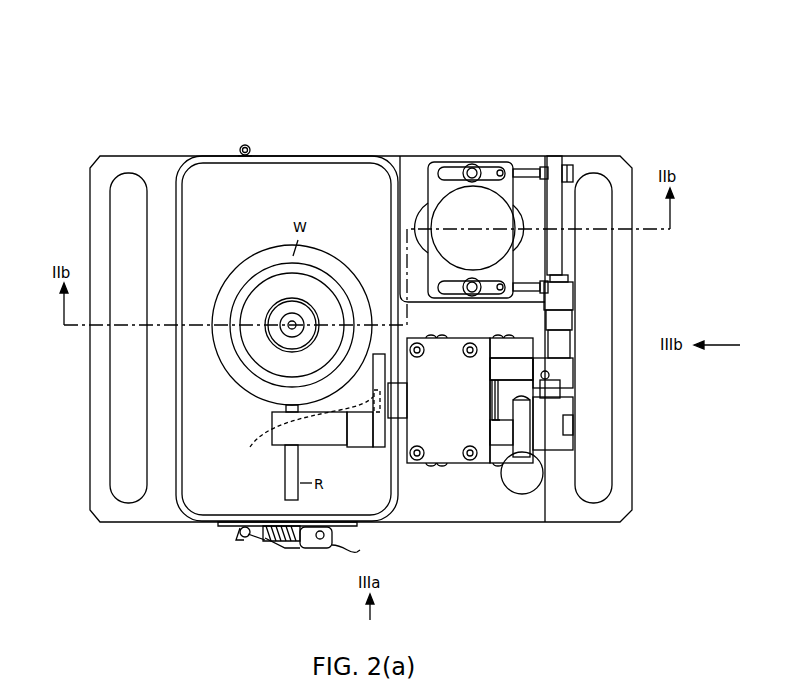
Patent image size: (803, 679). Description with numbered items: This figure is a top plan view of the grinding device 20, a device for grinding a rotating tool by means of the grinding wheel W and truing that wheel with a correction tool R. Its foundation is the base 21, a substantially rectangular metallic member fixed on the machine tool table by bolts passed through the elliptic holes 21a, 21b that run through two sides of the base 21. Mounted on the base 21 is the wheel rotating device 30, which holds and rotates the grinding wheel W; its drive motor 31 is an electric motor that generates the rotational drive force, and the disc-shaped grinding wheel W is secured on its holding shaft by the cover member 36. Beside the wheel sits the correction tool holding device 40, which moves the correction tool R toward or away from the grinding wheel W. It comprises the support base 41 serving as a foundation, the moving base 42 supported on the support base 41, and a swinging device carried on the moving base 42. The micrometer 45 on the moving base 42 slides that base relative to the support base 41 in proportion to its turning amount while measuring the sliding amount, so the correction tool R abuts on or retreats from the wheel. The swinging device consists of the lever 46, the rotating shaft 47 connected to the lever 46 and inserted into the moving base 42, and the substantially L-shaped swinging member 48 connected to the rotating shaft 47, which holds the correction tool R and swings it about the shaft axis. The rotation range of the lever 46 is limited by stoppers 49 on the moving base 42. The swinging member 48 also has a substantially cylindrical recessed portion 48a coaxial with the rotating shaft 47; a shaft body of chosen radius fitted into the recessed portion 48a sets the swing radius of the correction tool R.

The grinding device 20 is at (512, 135).
The base 21 is at (632, 492).
The elliptic hole 21a is at (112, 212).
The elliptic hole 21b is at (612, 262).
The wheel rotating device 30 is at (423, 152).
The drive motor 31 is at (497, 215).
The cover member 36 is at (283, 343).
The correction tool holding device 40 is at (498, 433).
The support base 41 is at (527, 338).
The moving base 42 is at (450, 338).
The micrometer 45 is at (568, 320).
The lever 46 is at (532, 478).
The rotating shaft 47 is at (395, 398).
The swinging member 48 is at (350, 438).
The recessed portion 48a is at (296, 429).
The stopper 49 is at (512, 370).